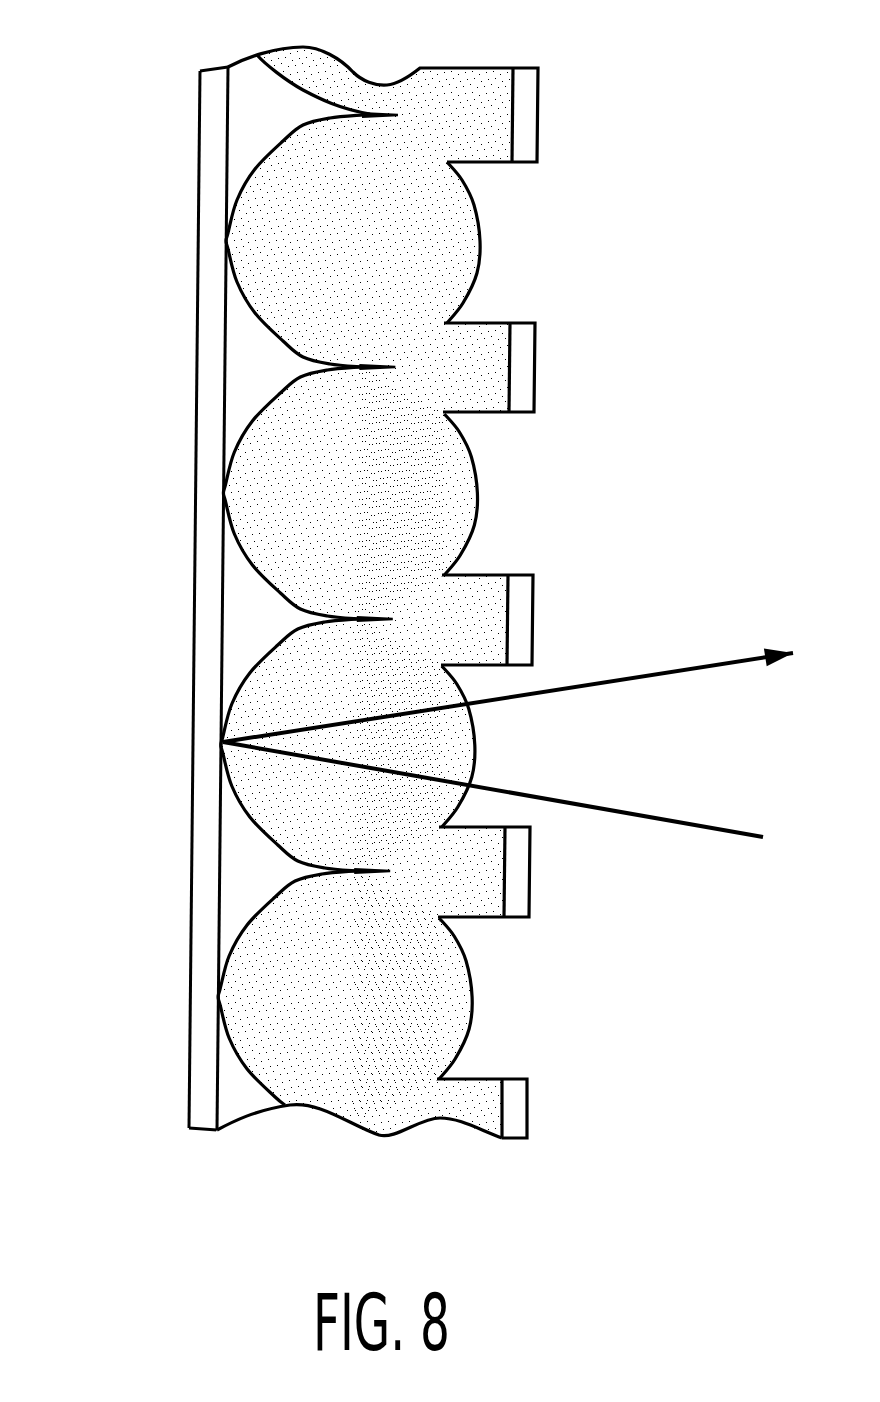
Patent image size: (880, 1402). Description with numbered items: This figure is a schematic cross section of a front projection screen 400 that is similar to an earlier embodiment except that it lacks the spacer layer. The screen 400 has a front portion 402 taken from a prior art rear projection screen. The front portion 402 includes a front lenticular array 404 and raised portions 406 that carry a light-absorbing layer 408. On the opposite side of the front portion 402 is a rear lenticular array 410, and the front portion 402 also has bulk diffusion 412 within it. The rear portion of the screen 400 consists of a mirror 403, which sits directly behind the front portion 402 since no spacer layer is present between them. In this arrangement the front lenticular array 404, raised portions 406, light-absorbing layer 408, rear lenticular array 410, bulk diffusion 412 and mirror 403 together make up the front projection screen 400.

The front projection screen 400 is at (47, 630).
The front portion 402 is at (358, 620).
The mirror 403 is at (191, 1049).
The front lenticular array 404 is at (472, 994).
The raised portions 406 is at (486, 574).
The light-absorbing layer 408 is at (535, 347).
The rear lenticular array 410 is at (262, 160).
The bulk diffusion 412 is at (464, 78).